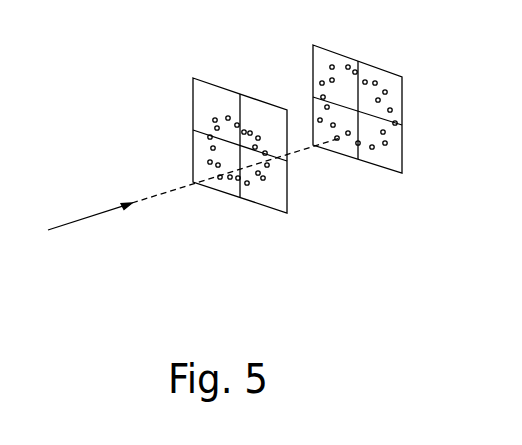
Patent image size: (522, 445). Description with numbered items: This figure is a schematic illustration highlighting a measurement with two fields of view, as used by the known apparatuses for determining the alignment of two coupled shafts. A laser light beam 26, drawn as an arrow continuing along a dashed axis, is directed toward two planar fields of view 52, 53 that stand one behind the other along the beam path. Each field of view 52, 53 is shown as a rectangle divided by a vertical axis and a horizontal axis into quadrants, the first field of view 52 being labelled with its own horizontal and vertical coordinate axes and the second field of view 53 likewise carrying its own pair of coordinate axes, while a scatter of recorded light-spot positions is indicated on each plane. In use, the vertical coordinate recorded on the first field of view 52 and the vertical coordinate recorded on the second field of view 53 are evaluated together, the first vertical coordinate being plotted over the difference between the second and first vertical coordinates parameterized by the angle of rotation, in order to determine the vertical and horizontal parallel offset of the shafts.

The laser light beam 26 is at (100, 213).
The field of view 52 is at (280, 192).
The field of view 53 is at (392, 160).